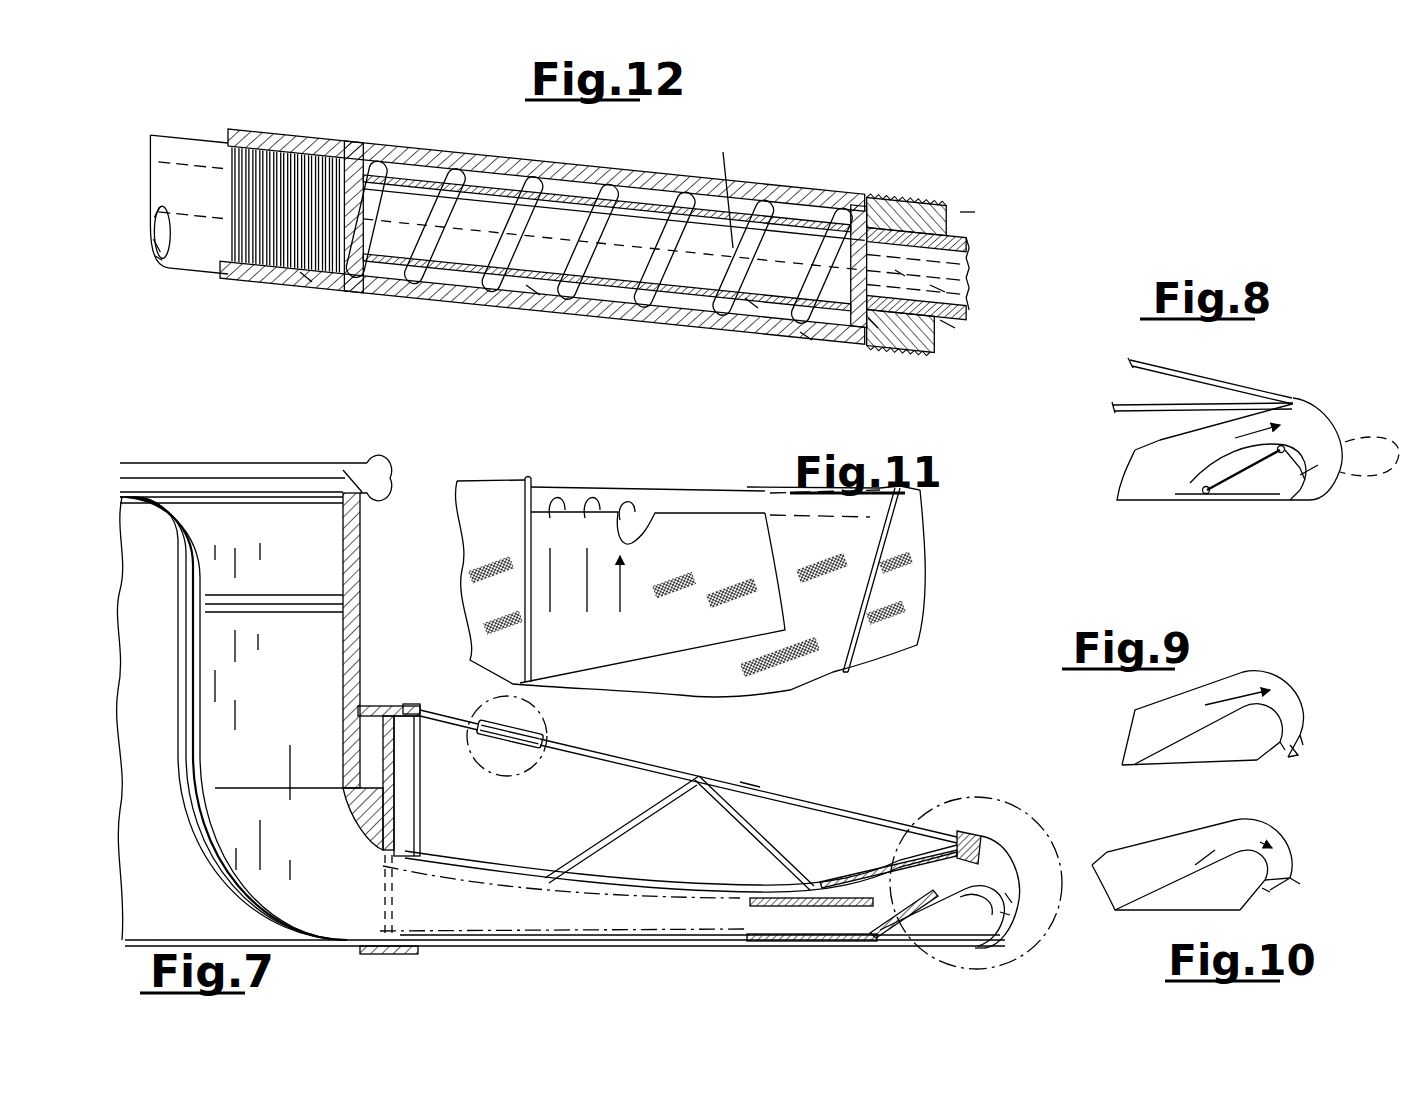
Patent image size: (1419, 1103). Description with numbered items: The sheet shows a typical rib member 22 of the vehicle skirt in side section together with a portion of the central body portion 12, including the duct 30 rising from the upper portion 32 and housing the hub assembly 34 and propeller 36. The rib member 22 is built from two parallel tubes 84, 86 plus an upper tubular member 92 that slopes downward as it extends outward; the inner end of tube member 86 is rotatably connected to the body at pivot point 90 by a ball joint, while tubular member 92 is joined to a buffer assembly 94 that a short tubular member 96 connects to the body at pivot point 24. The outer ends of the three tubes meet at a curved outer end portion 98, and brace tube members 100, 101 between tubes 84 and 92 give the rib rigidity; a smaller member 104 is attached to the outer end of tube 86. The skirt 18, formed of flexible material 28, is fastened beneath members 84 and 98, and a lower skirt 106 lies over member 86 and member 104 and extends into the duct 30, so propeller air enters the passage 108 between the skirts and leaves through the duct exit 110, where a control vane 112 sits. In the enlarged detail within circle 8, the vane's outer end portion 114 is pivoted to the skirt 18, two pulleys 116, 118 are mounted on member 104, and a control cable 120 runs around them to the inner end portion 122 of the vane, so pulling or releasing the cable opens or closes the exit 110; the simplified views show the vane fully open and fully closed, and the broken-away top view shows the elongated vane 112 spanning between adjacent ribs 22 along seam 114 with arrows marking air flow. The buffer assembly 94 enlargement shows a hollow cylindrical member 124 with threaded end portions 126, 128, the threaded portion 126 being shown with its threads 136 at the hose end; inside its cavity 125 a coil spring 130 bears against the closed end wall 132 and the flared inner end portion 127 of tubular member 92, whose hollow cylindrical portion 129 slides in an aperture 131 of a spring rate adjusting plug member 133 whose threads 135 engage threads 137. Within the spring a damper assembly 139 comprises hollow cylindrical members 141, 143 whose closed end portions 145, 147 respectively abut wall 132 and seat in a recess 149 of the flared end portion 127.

In FIG. 7, the circle 8 is at (1052, 832).
In FIG. 7, the central body portion 12 is at (497, 776).
In FIG. 11, the skirt 18 is at (717, 684).
In FIG. 11, the rib member 22 is at (533, 482).
In FIG. 7, the rib member 22 is at (747, 783).
In FIG. 7, the pivot point 24 is at (415, 704).
In FIG. 7, the flexible material 28 is at (766, 904).
In FIG. 7, the duct 30 is at (365, 557).
In FIG. 7, the upper portion 32 is at (373, 705).
In FIG. 7, the hub assembly 34 is at (155, 610).
In FIG. 7, the propeller 36 is at (290, 594).
In FIG. 7, the tube 84 is at (680, 888).
In FIG. 7, the tube member 86 is at (717, 946).
In FIG. 7, the pivot point 90 is at (416, 952).
In FIG. 12, the upper tubular member 92 is at (918, 273).
In FIG. 7, the upper tubular member 92 is at (660, 768).
In FIG. 12, the buffer assembly 94 is at (774, 170).
In FIG. 7, the buffer assembly 94 is at (535, 745).
In FIG. 12, the short tubular member 96 is at (189, 204).
In FIG. 7, the short tubular member 96 is at (446, 723).
In FIG. 7, the curved outer end portion 98 is at (998, 853).
In FIG. 8, the curved outer end portion 98 is at (1312, 400).
In FIG. 7, the tube member 100 is at (772, 858).
In FIG. 7, the tube member 101 is at (630, 811).
In FIG. 7, the member 104 is at (960, 941).
In FIG. 8, the member 104 is at (1266, 488).
In FIG. 9, the member 104 is at (1245, 757).
In FIG. 10, the member 104 is at (1232, 905).
In FIG. 11, the lower skirt 106 is at (727, 561).
In FIG. 7, the lower skirt 106 is at (392, 906).
In FIG. 7, the passage 108 is at (588, 928).
In FIG. 8, the passage 108 is at (1177, 478).
In FIG. 9, the passage 108 is at (1182, 736).
In FIG. 10, the passage 108 is at (1157, 888).
In FIG. 7, the duct exit 110 is at (980, 937).
In FIG. 8, the duct exit 110 is at (1296, 500).
In FIG. 9, the duct exit 110 is at (1278, 756).
In FIG. 10, the duct exit 110 is at (1268, 890).
In FIG. 11, the control vane 112 is at (660, 490).
In FIG. 7, the control vane 112 is at (1010, 913).
In FIG. 8, the control vane 112 is at (1305, 475).
In FIG. 9, the control vane 112 is at (1298, 752).
In FIG. 10, the control vane 112 is at (1290, 878).
In FIG. 7, the outer end portion 114 is at (998, 907).
In FIG. 8, the outer end portion 114 is at (1395, 418).
In FIG. 9, the outer end portion 114 is at (1302, 728).
In FIG. 10, the outer end portion 114 is at (1300, 885).
In FIG. 8, the pulley 116 is at (1204, 495).
In FIG. 8, the pulley 118 is at (1268, 460).
In FIG. 8, the control cable 120 is at (1233, 470).
In FIG. 8, the inner end portion 122 is at (1286, 455).
In FIG. 12, the hollow cylindrical member 124 is at (807, 337).
In FIG. 12, the cavity 125 is at (533, 290).
In FIG. 12, the threaded end portion 126 is at (542, 236).
In FIG. 12, the flared inner end portion 127 is at (873, 323).
In FIG. 12, the threaded end portion 128 is at (907, 214).
In FIG. 12, the hollow cylindrical portion 129 is at (968, 217).
In FIG. 12, the coil spring 130 is at (722, 187).
In FIG. 12, the aperture 131 is at (940, 290).
In FIG. 12, the closed end wall 132 is at (353, 217).
In FIG. 12, the spring rate adjusting plug member 133 is at (950, 325).
In FIG. 12, the threads 135 is at (901, 332).
In FIG. 12, the threads 136 is at (285, 209).
In FIG. 12, the threads 137 is at (897, 338).
In FIG. 12, the damper assembly 139 is at (606, 203).
In FIG. 12, the hollow cylindrical member 141 is at (606, 282).
In FIG. 12, the hollow cylindrical member 143 is at (752, 303).
In FIG. 12, the closed outer end portion 145 is at (600, 242).
In FIG. 12, the closed outer end portion 147 is at (859, 266).
In FIG. 12, the recess 149 is at (905, 273).